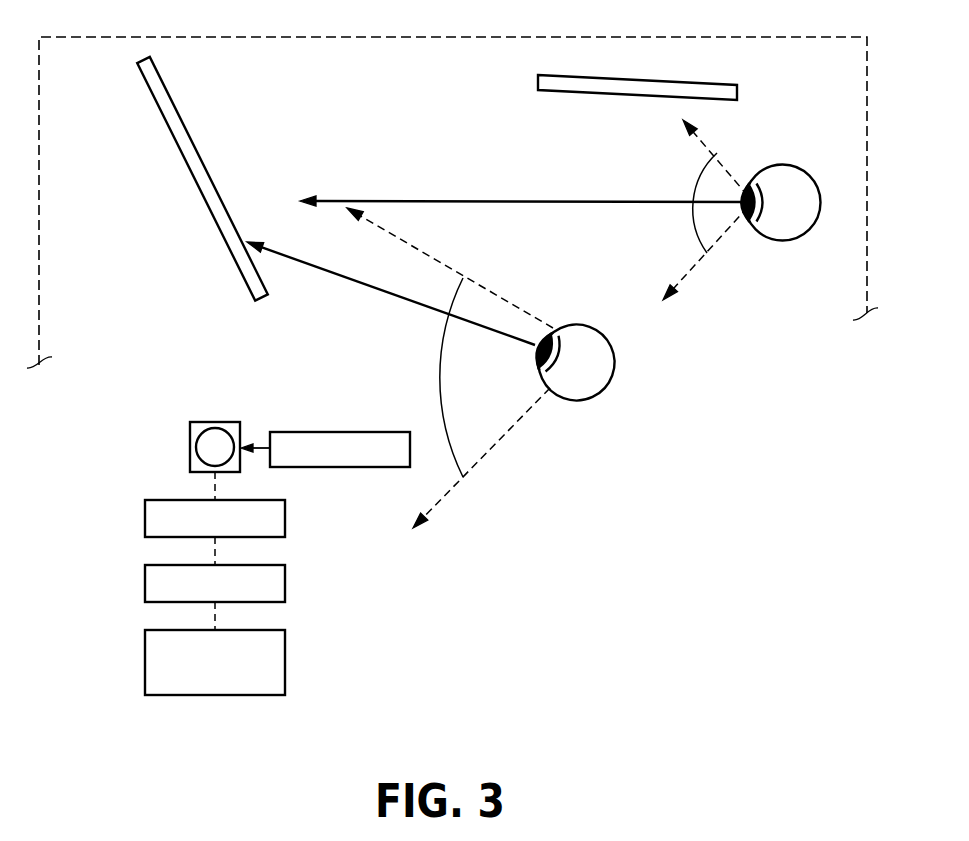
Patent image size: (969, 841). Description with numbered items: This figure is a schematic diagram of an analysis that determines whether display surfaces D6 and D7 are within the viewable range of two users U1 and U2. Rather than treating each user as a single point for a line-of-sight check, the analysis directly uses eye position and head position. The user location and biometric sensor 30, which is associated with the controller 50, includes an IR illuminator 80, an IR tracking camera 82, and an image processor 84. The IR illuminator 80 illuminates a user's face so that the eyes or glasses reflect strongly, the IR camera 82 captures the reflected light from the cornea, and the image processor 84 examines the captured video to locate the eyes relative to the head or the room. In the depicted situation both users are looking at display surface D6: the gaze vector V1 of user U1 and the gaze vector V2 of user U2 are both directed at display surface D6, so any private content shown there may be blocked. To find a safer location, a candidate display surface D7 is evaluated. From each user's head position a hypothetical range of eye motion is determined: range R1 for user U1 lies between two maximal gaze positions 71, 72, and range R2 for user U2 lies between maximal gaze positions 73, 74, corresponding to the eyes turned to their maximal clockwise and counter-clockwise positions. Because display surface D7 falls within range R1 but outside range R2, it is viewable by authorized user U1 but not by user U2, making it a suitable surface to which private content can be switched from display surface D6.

The display surface D6 is at (172, 101).
The candidate display surface D7 is at (580, 92).
The gaze vector V1 is at (580, 202).
The gaze vector V2 is at (383, 297).
The maximal gaze position 71 is at (719, 153).
The maximal gaze position 72 is at (690, 270).
The maximal gaze position 73 is at (435, 262).
The maximal gaze position 74 is at (482, 457).
The range of eye motion R1 is at (697, 203).
The range of eye motion R2 is at (443, 377).
The user U1 is at (787, 241).
The user U2 is at (580, 401).
The controller 50 is at (320, 431).
The user location and biometric sensor 30 is at (190, 449).
The IR illuminator 80 is at (145, 518).
The IR tracking camera 82 is at (145, 583).
The image processor 84 is at (145, 665).